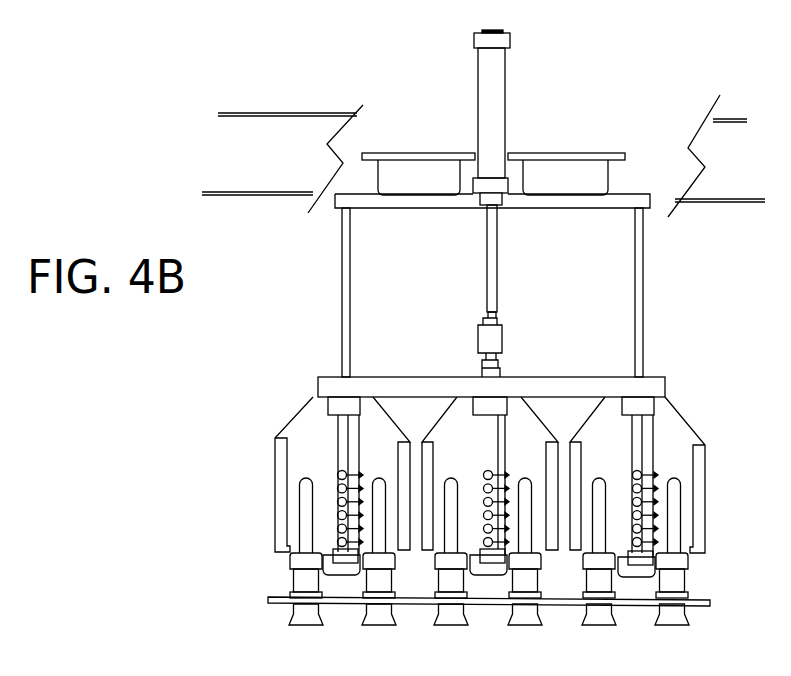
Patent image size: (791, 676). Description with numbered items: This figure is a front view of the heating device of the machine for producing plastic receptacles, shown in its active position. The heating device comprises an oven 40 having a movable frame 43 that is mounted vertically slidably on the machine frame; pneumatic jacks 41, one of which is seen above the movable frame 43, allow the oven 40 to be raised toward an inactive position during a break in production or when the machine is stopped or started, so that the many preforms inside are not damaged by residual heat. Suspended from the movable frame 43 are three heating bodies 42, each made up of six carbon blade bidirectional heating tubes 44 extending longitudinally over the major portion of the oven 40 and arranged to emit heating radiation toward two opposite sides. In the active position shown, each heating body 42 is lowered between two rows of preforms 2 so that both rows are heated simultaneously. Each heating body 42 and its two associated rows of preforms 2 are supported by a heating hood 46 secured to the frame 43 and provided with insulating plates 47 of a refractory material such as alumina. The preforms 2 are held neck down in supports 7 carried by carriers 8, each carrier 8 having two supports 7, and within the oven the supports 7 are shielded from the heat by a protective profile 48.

The pneumatic jack 41 is at (493, 98).
The oven 40 is at (508, 367).
The movable frame 43 is at (650, 388).
The heating hood 46 is at (316, 413).
The heating body 42 is at (335, 488).
The insulating plate 47 is at (280, 508).
The support 7 is at (296, 563).
The carrier 8 is at (268, 599).
The carbon blade bidirectional heating tube 44 is at (347, 556).
The protective profile 48 is at (469, 576).
The preform 2 is at (672, 510).